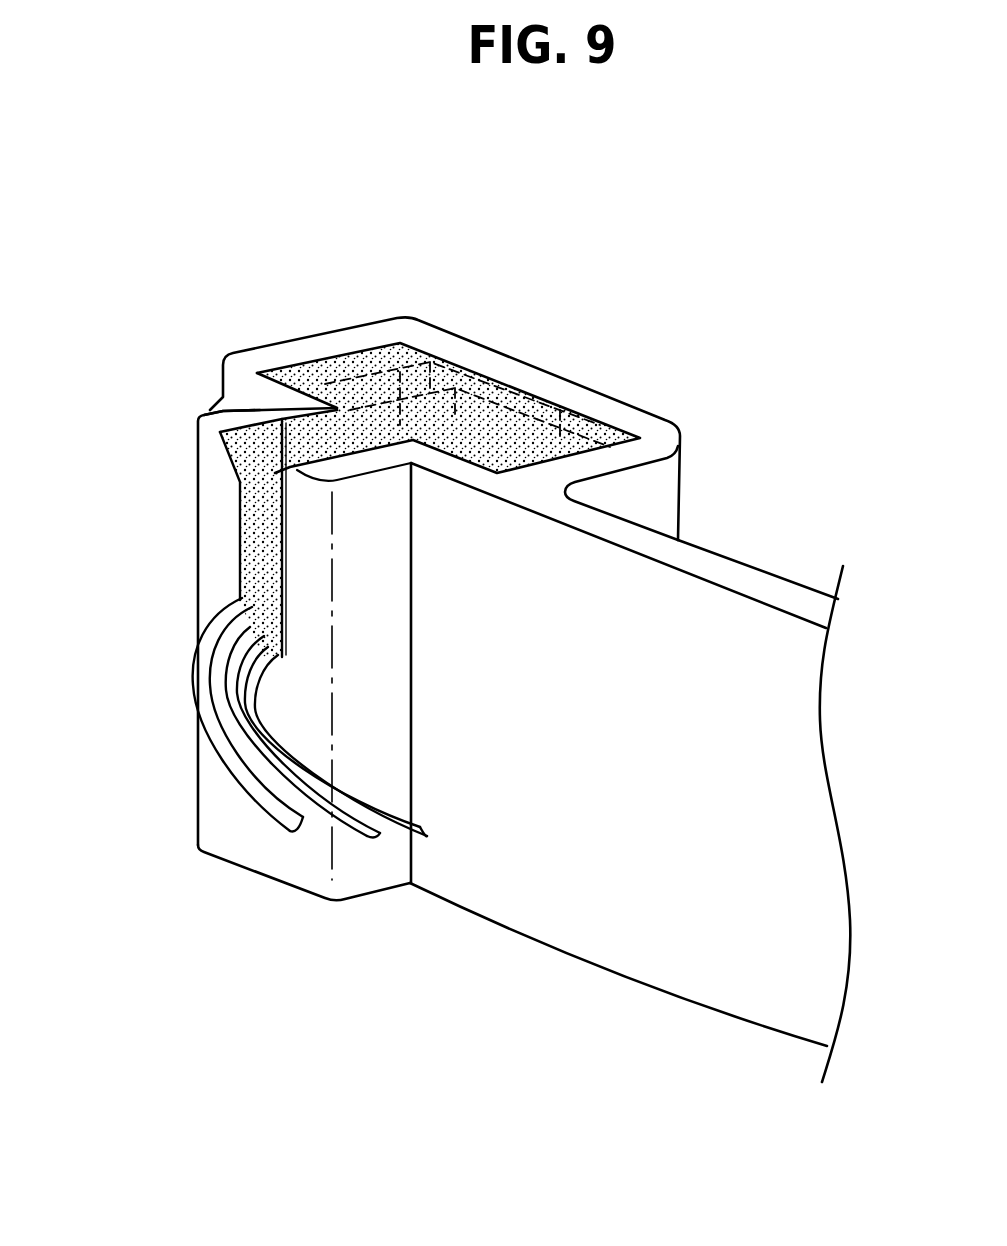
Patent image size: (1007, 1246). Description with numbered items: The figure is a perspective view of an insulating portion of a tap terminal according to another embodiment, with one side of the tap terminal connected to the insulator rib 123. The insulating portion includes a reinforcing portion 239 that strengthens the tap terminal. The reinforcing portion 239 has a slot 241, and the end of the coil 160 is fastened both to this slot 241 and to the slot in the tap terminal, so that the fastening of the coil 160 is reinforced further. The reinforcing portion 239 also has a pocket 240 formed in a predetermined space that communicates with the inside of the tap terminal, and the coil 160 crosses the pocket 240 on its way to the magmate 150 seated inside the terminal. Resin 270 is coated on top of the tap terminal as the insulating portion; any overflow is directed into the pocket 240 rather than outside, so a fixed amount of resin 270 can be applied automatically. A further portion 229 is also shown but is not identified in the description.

The insulator rib 123 is at (768, 588).
The magmate 150 is at (443, 423).
The coil 160 is at (222, 750).
The cover portion 229 is at (640, 417).
The reinforcing portion 239 is at (227, 432).
The pocket 240 is at (223, 347).
The slot 241 is at (240, 573).
The resin 270 is at (363, 450).